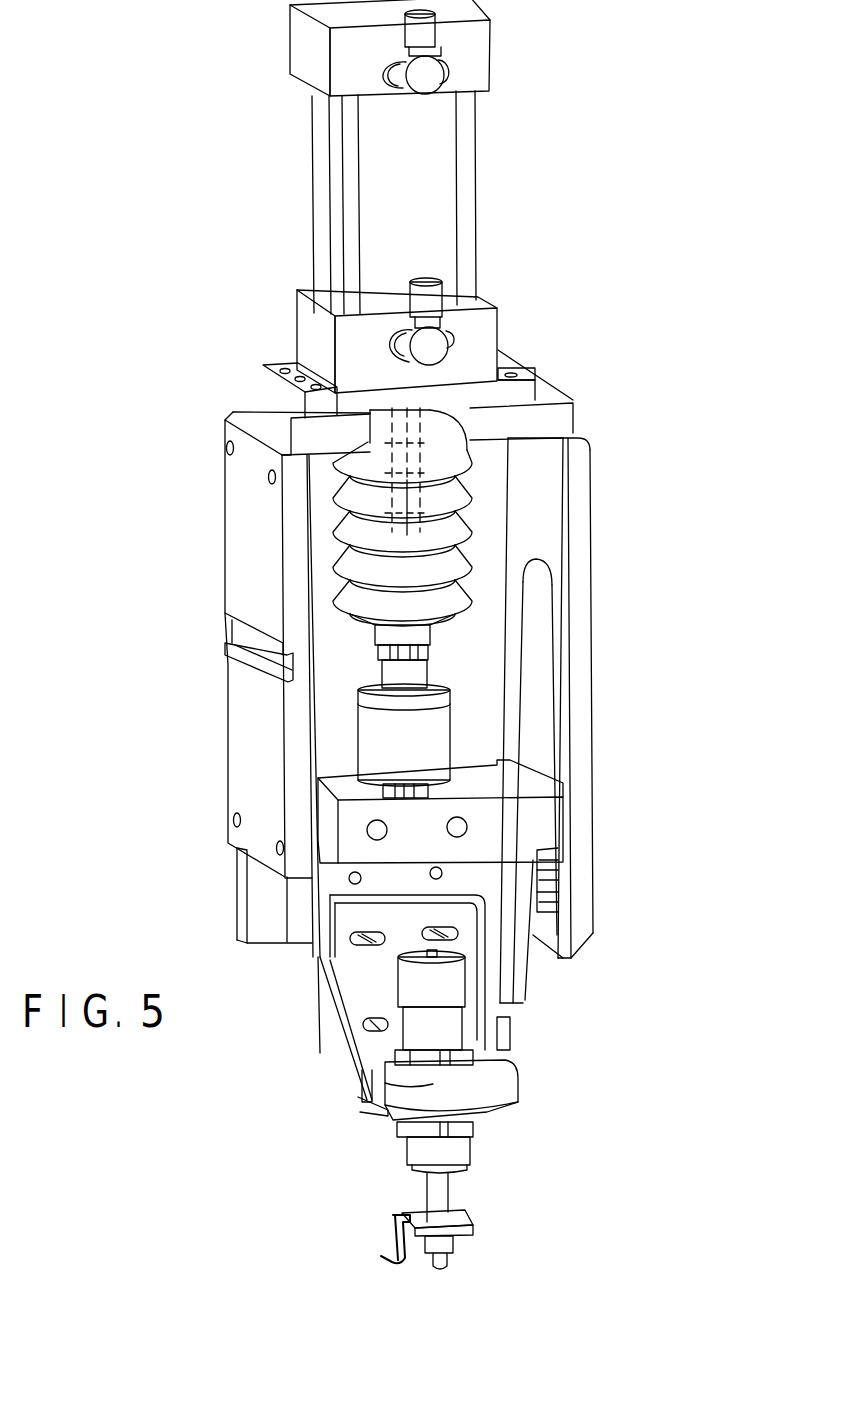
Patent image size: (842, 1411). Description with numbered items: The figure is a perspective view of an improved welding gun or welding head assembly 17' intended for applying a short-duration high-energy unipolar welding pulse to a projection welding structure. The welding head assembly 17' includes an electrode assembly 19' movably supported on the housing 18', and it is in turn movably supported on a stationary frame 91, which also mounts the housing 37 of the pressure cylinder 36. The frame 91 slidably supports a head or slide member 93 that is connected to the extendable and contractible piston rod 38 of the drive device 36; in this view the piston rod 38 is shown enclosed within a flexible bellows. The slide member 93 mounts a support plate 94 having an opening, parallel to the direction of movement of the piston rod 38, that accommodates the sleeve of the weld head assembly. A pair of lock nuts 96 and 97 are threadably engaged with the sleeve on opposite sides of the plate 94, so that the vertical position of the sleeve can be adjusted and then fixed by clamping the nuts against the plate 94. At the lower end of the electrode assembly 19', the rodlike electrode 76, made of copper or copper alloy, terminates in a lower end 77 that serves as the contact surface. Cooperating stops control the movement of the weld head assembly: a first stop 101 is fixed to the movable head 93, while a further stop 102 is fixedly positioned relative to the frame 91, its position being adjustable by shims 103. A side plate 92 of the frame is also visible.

The pressure cylinder 36 is at (487, 182).
The housing of the pressure cylinder 37 is at (377, 145).
The piston rod 38 is at (417, 435).
The stationary frame 91 is at (240, 507).
The right side plate 92 is at (485, 508).
The slide member 93 is at (355, 822).
The support plate 94 is at (380, 1105).
The lock nut 96 is at (483, 1060).
The lock nut 97 is at (473, 1130).
The first stop 101 is at (545, 863).
The further stop 102 is at (545, 883).
The shims 103 is at (555, 907).
The welding head assembly 17' is at (477, 984).
The housing 18' is at (363, 1007).
The electrode assembly 19' is at (513, 1204).
The electrode 76 is at (432, 1253).
The lower end 77 is at (443, 1280).